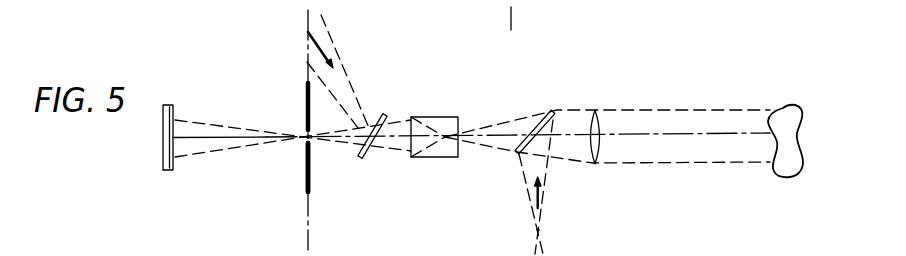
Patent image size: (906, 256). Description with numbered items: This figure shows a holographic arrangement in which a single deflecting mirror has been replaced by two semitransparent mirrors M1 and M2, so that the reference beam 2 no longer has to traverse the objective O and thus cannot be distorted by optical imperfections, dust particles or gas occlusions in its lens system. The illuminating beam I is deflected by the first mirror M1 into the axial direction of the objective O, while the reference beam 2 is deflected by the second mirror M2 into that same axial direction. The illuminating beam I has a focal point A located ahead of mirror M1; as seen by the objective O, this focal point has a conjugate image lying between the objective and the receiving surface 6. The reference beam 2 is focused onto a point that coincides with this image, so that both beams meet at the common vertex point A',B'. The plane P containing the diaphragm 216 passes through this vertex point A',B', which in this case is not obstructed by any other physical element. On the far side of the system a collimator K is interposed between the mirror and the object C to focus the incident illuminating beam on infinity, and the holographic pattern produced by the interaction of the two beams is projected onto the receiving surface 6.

The receiving surface 6 is at (175, 118).
The reference beam 2 is at (310, 51).
The plane P is at (308, 67).
The diaphragm 216 is at (303, 178).
The vertex point A',B' is at (337, 174).
The second semitransparent mirror M2 is at (381, 115).
The objective O is at (437, 157).
The first semitransparent mirror M1 is at (553, 111).
The collimator K is at (593, 163).
The illuminating beam I is at (542, 196).
The focal point A is at (515, 222).
The object C is at (788, 158).